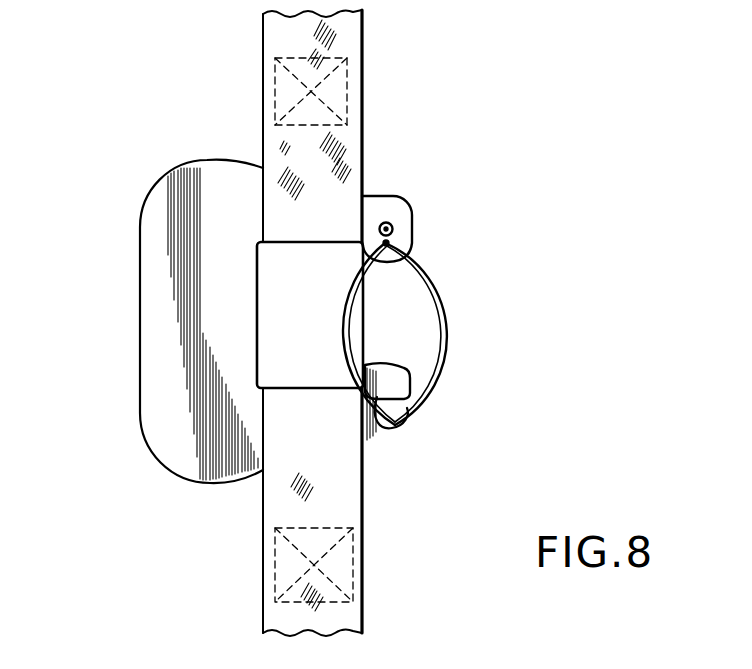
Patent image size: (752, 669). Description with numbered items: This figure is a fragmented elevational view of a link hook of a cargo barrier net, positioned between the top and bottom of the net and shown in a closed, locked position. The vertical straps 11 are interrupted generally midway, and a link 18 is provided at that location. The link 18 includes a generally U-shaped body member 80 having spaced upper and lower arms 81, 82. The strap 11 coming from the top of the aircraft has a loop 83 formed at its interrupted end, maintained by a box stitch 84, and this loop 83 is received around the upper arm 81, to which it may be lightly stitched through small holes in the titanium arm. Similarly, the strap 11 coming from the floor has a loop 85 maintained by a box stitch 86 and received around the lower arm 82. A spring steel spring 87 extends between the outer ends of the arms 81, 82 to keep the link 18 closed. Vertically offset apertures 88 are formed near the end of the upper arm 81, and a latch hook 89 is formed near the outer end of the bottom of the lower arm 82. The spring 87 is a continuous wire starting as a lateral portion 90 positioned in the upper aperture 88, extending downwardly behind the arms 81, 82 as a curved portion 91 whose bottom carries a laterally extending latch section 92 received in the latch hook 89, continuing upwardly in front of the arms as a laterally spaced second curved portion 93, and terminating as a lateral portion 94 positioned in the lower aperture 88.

The vertical strap 11 is at (363, 27).
The link 18 is at (383, 195).
The U-shaped body member 80 is at (163, 300).
The upper arm 81 is at (367, 197).
The lower arm 82 is at (440, 368).
The loop 83 is at (287, 222).
The box stitch 84 is at (287, 78).
The loop 85 is at (342, 487).
The box stitch 86 is at (287, 562).
The spring 87 is at (462, 299).
The apertures 88 is at (387, 196).
The latch hook 89 is at (397, 428).
The lateral portion 90 is at (393, 226).
The curved portion 91 is at (343, 347).
The latch section 92 is at (430, 405).
The second curved portion 93 is at (433, 281).
The lateral portion 94 is at (358, 241).